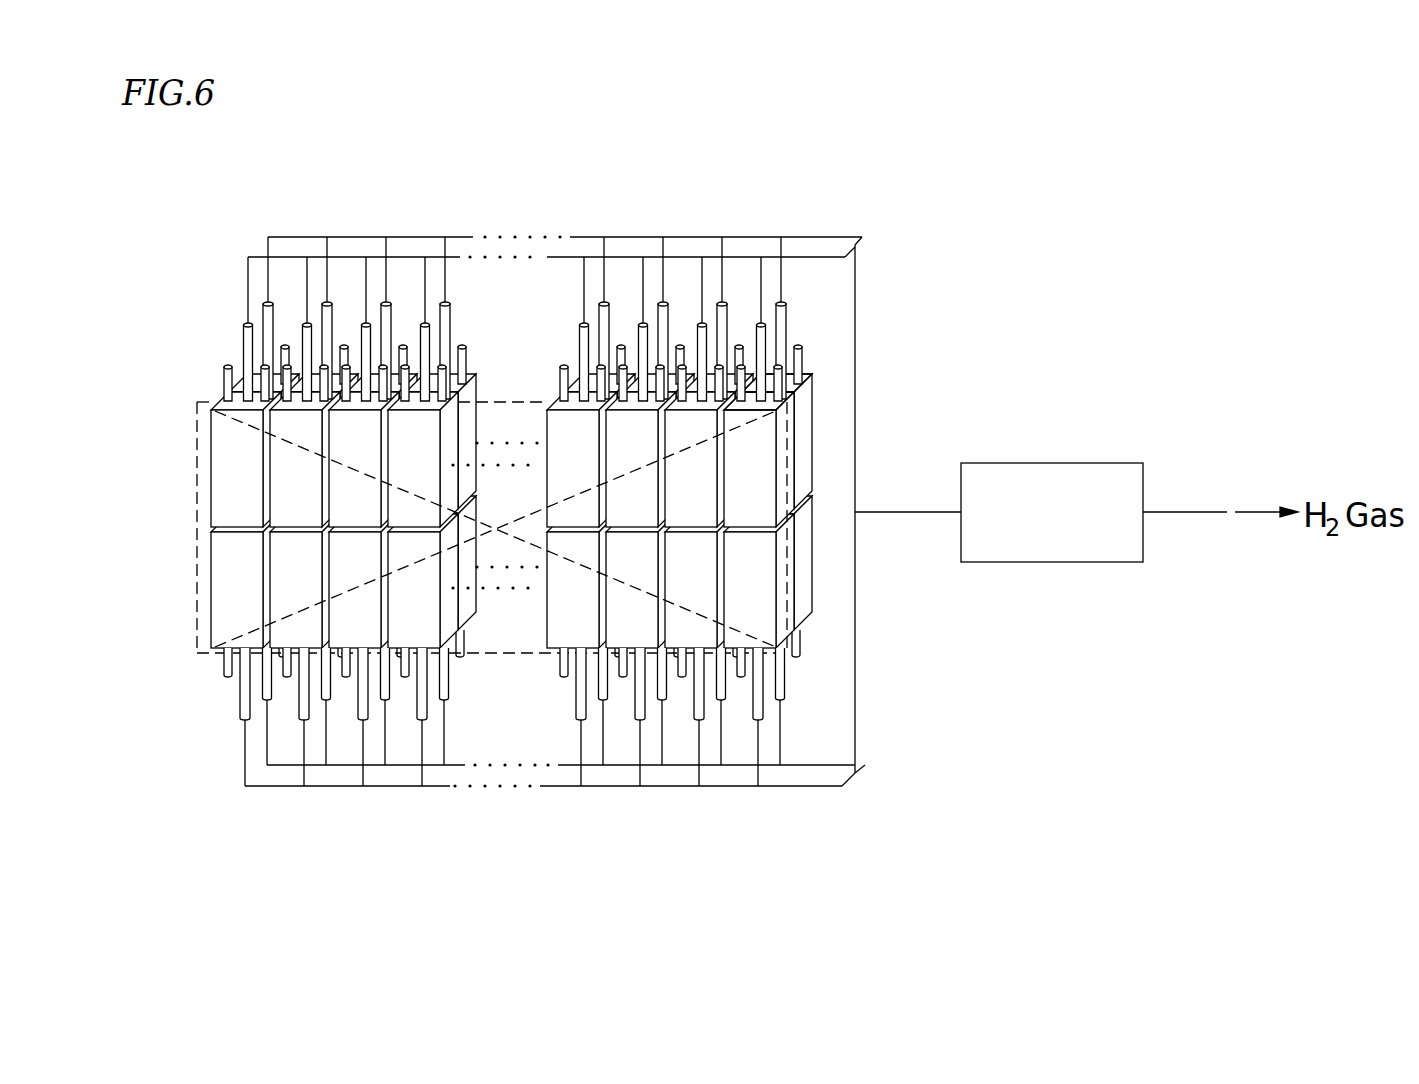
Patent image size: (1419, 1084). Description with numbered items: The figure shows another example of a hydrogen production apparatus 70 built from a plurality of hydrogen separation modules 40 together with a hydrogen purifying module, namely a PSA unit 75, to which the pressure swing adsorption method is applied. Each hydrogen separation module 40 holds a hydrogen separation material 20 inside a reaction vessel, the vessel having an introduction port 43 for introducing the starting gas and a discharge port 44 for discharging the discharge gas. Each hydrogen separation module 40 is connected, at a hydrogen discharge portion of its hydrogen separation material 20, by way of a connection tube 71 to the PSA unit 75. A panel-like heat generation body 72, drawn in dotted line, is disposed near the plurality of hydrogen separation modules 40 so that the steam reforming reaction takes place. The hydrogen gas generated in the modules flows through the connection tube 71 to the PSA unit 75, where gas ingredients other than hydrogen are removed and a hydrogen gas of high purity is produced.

The hydrogen separation material 20 is at (762, 322).
The hydrogen separation module 40 is at (816, 462).
The introduction port 43 is at (775, 367).
The discharge port 44 is at (783, 382).
The hydrogen production apparatus 70 is at (522, 531).
The connection tube 71 is at (312, 237).
The panel-like heat generation body 72 is at (200, 455).
The PSA unit 75 is at (1057, 462).